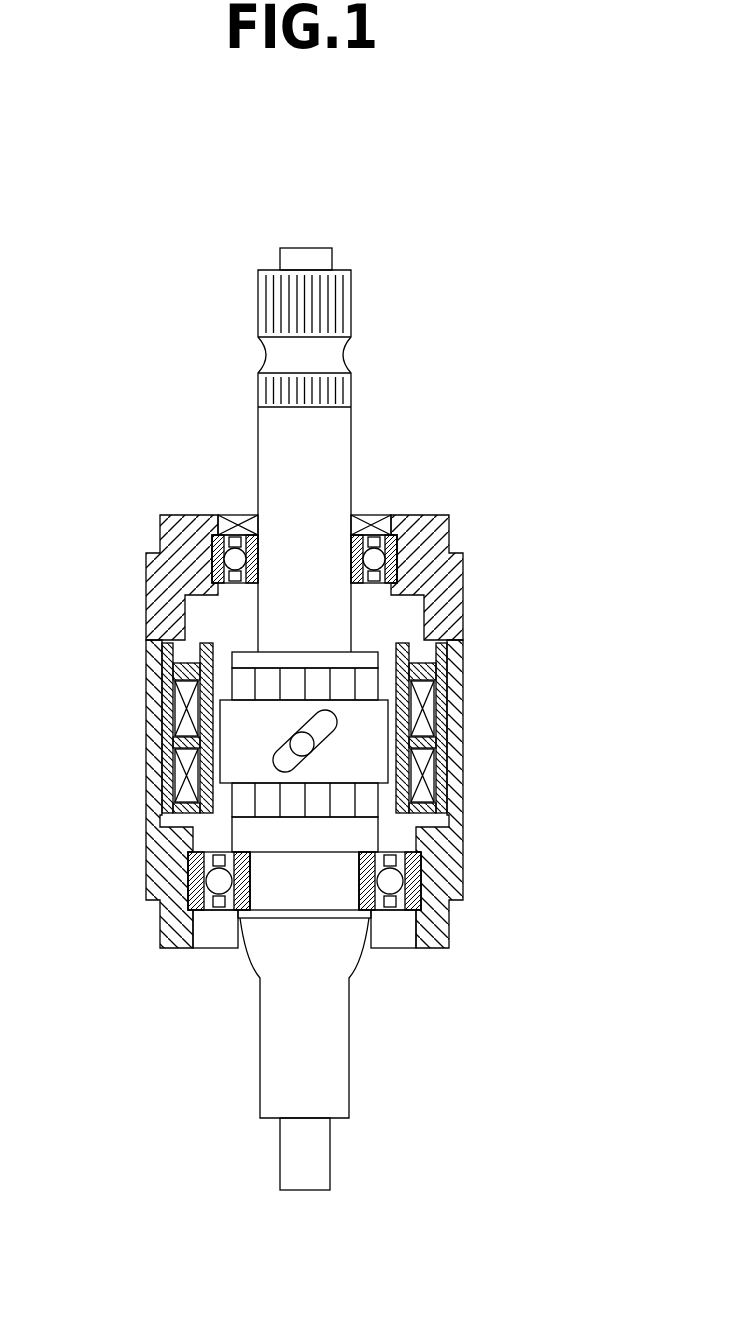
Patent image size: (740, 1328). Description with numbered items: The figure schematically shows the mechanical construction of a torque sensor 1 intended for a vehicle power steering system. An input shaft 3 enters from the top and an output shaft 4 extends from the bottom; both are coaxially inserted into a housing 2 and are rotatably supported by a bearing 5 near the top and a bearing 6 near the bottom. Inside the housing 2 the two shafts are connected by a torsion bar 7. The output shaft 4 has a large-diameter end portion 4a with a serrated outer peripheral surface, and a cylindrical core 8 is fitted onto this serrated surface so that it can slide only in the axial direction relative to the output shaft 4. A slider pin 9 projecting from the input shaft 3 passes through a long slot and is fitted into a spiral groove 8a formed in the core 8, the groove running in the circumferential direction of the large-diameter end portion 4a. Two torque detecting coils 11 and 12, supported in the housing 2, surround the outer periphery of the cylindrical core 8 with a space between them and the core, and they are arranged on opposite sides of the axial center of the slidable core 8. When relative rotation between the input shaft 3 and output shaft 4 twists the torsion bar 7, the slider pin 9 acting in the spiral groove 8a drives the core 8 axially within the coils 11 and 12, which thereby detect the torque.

The torque sensor 1 is at (156, 292).
The housing 2 is at (146, 576).
The input shaft 3 is at (332, 430).
The output shaft 4 is at (342, 1078).
The large-diameter end portion 4a is at (343, 680).
The bearing 5 is at (250, 530).
The bearing 6 is at (218, 900).
The torsion bar 7 is at (313, 257).
The cylindrical core 8 is at (245, 722).
The spiral groove 8a is at (277, 770).
The slider pin 9 is at (303, 745).
The torque detecting coil 11 is at (427, 716).
The torque detecting coil 12 is at (427, 778).